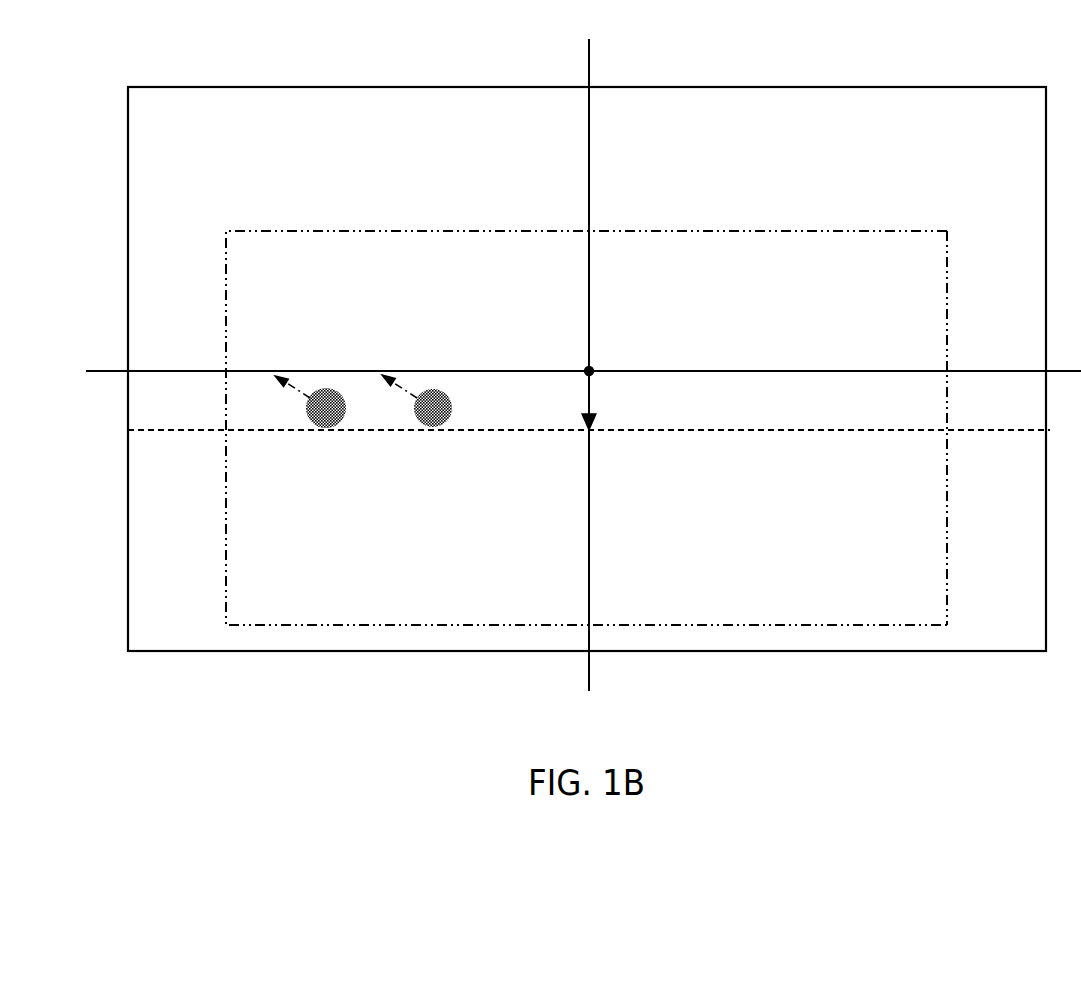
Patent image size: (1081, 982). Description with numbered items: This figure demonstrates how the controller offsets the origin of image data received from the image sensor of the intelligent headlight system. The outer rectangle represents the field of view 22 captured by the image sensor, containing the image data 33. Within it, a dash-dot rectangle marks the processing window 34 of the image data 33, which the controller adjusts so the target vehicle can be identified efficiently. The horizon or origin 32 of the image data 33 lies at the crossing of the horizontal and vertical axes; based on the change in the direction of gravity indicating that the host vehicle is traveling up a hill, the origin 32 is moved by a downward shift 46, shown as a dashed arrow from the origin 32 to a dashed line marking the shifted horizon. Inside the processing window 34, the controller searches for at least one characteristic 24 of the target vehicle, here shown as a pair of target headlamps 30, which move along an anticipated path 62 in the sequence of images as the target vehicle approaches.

The field of view 22 is at (662, 87).
The image data 33 is at (920, 104).
The characteristic 24 is at (409, 338).
The processing window 34 is at (948, 489).
The origin 32 is at (589, 371).
The downward shift 46 is at (592, 401).
The target headlamps 30 is at (333, 423).
The anticipated path 62 is at (387, 381).